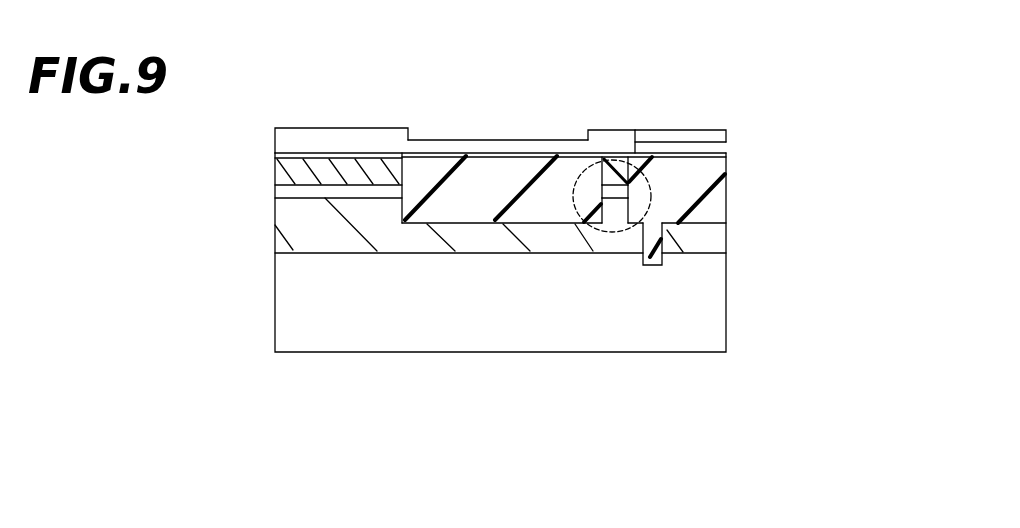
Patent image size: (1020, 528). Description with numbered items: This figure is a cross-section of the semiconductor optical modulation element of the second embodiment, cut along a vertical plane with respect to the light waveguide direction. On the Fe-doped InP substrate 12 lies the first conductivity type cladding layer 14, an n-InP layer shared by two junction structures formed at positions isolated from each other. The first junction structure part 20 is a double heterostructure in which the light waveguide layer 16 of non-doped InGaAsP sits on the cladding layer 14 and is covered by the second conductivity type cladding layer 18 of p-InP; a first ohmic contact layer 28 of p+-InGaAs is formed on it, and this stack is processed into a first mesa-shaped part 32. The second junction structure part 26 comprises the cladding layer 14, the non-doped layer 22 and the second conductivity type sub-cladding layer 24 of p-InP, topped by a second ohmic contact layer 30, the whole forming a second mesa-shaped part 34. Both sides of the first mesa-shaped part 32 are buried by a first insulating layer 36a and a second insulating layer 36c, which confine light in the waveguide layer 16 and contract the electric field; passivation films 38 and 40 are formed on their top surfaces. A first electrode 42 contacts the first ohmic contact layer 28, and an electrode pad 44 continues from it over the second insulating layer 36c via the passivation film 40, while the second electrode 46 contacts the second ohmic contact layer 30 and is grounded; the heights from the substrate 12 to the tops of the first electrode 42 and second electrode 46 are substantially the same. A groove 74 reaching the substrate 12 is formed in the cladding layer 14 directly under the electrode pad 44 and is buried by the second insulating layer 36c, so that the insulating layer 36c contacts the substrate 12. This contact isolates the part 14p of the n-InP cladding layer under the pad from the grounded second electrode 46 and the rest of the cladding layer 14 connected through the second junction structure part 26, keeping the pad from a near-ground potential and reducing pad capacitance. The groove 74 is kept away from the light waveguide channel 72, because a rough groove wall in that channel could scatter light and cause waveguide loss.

The substrate 12 is at (726, 290).
The first conductivity type cladding layer 14 is at (328, 215).
The part of the n-InP cladding layer directly under the electrode pad 14p is at (726, 243).
The light waveguide layer 16 is at (613, 193).
The second conductivity type cladding layer 18 is at (620, 207).
The first junction structure part 20 is at (578, 387).
The non-doped layer 22 is at (337, 192).
The second conductivity type sub-cladding layer 24 is at (340, 165).
The second junction structure part 26 is at (292, 388).
The first ohmic contact layer 28 is at (592, 160).
The second ohmic contact layer 30 is at (332, 158).
The first mesa-shaped part 32 is at (535, 428).
The second mesa-shaped part 34 is at (252, 418).
The first insulating layer 36a is at (437, 213).
The second insulating layer 36c is at (726, 183).
The passivation film 38 is at (470, 142).
The passivation film 40 is at (725, 147).
The first electrode 42 is at (635, 125).
The electrode pad 44 is at (635, 125).
The second electrode 46 is at (277, 143).
The light waveguide channel 72 is at (648, 200).
The groove 74 is at (667, 233).